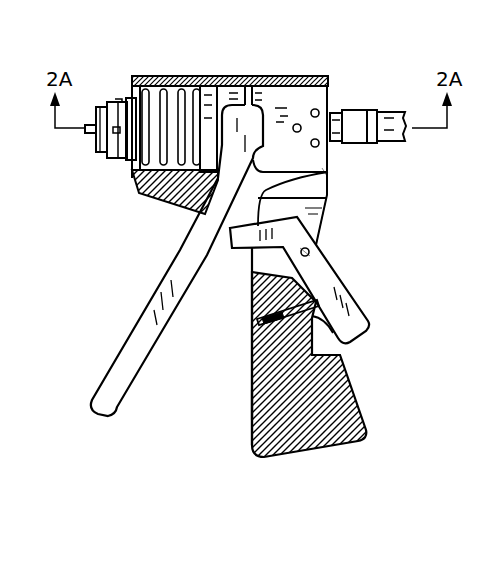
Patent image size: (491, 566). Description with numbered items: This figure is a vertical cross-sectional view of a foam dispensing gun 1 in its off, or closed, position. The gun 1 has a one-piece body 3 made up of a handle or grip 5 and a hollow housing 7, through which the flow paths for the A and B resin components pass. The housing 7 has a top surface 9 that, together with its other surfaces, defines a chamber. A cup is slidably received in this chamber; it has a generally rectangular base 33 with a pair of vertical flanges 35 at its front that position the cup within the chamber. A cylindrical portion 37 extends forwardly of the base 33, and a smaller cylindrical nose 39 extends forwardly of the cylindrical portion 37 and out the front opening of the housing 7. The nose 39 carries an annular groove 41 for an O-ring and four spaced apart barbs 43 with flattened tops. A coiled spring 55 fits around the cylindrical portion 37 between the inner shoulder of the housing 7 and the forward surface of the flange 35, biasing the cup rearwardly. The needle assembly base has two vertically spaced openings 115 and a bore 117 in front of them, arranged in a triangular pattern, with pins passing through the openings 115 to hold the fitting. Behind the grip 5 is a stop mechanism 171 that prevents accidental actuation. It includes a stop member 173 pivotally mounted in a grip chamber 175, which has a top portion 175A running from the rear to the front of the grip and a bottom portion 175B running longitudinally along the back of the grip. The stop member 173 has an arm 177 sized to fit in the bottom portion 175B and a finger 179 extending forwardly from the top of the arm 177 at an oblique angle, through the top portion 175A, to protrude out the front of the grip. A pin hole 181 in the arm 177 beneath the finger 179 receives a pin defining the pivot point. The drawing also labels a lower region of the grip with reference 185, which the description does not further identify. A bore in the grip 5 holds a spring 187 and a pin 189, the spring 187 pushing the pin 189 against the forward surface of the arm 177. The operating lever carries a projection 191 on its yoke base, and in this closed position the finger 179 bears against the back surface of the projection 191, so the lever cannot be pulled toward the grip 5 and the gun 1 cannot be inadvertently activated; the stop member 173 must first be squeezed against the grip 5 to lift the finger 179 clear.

The foam dispensing gun 1 is at (299, 42).
The one-piece body 3 is at (320, 70).
The grip 5 is at (363, 425).
The housing 7 is at (247, 68).
The top surface 9 is at (163, 77).
The base 33 is at (231, 77).
The vertical flanges 35 is at (205, 77).
The cylindrical portion 37 is at (130, 97).
The cylindrical nose 39 is at (112, 101).
The annular groove 41 is at (103, 152).
The barbs 43 is at (118, 100).
The coiled spring 55 is at (143, 198).
The openings 115 is at (300, 122).
The bore 117 is at (318, 110).
The stop mechanism 171 is at (357, 240).
The stop member 173 is at (344, 271).
The grip chamber 175 is at (310, 212).
The top portion 175A is at (330, 206).
The bottom portion 175B is at (323, 340).
The arm 177 is at (357, 310).
The finger 179 is at (328, 172).
The pin hole 181 is at (300, 250).
The handle base 185 is at (251, 397).
The spring 187 is at (250, 337).
The pin 189 is at (322, 325).
The projection 191 is at (196, 276).